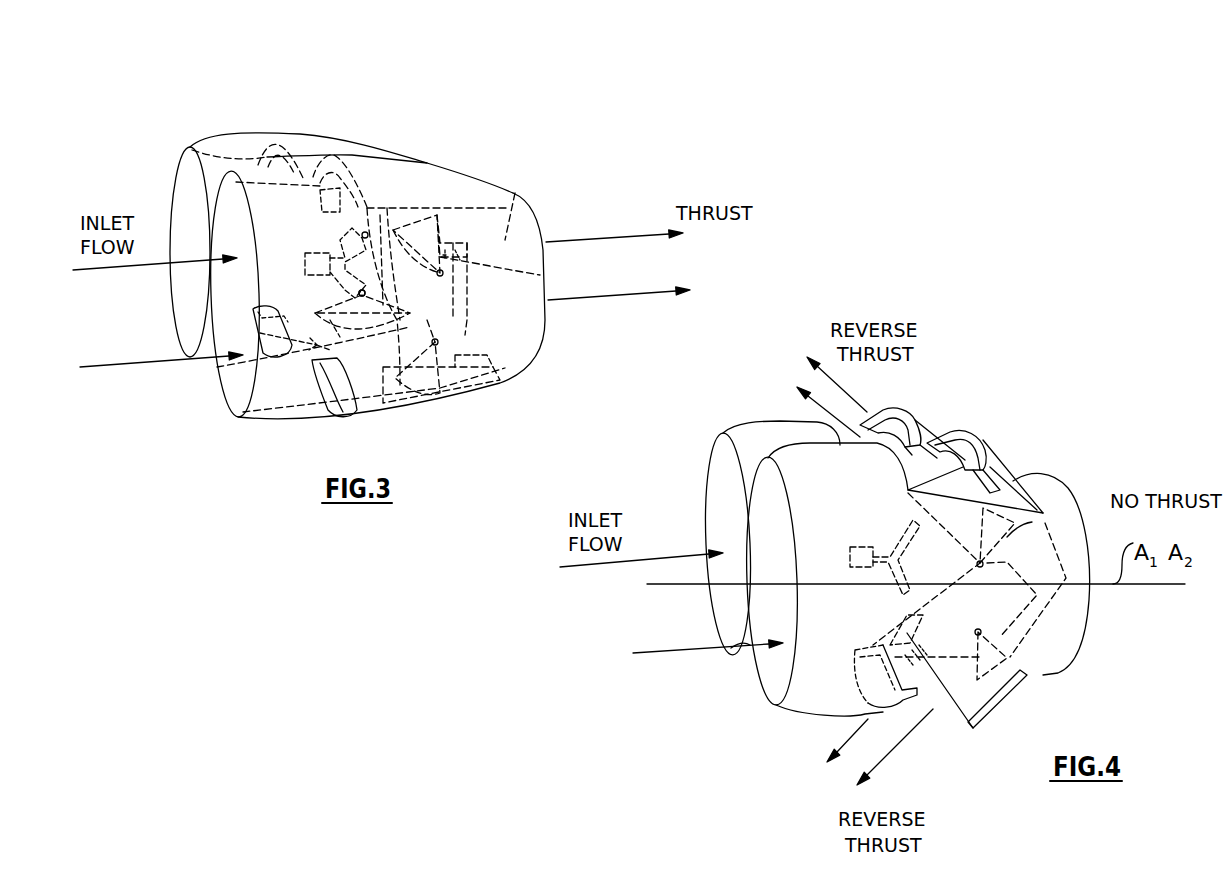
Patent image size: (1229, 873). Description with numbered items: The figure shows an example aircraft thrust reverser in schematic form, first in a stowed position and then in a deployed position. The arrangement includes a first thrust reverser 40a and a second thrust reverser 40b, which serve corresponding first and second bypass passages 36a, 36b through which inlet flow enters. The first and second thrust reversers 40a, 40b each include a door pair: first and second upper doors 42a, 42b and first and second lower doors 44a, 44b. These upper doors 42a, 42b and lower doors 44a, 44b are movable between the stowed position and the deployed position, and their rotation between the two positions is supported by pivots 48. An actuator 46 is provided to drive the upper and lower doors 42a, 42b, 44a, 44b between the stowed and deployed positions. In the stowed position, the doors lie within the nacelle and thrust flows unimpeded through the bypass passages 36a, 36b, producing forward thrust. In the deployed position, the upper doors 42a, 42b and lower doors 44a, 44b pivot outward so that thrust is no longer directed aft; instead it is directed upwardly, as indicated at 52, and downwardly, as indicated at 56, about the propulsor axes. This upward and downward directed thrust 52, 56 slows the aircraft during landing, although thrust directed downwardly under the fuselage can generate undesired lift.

In FIG. 3, the first bypass passage 36a is at (226, 383).
In FIG. 4, the first bypass passage 36a is at (727, 573).
In FIG. 3, the second bypass passage 36b is at (190, 287).
In FIG. 4, the second bypass passage 36b is at (777, 597).
In FIG. 3, the first thrust reverser 40a is at (500, 413).
In FIG. 3, the second thrust reverser 40b is at (316, 110).
In FIG. 3, the first upper door 42a is at (387, 181).
In FIG. 4, the first upper door 42a is at (990, 462).
In FIG. 3, the second upper door 42b is at (347, 141).
In FIG. 4, the second upper door 42b is at (917, 421).
In FIG. 3, the first lower door 44a is at (368, 415).
In FIG. 4, the first lower door 44a is at (1005, 688).
In FIG. 3, the second lower door 44b is at (270, 310).
In FIG. 3, the actuator 46 is at (322, 277).
In FIG. 4, the actuator 46 is at (850, 550).
In FIG. 3, the pivots 48 is at (540, 275).
In FIG. 4, the pivots 48 is at (1038, 520).
In FIG. 4, the upwardly directed thrust 52 is at (883, 389).
In FIG. 4, the downwardly directed thrust 56 is at (921, 760).